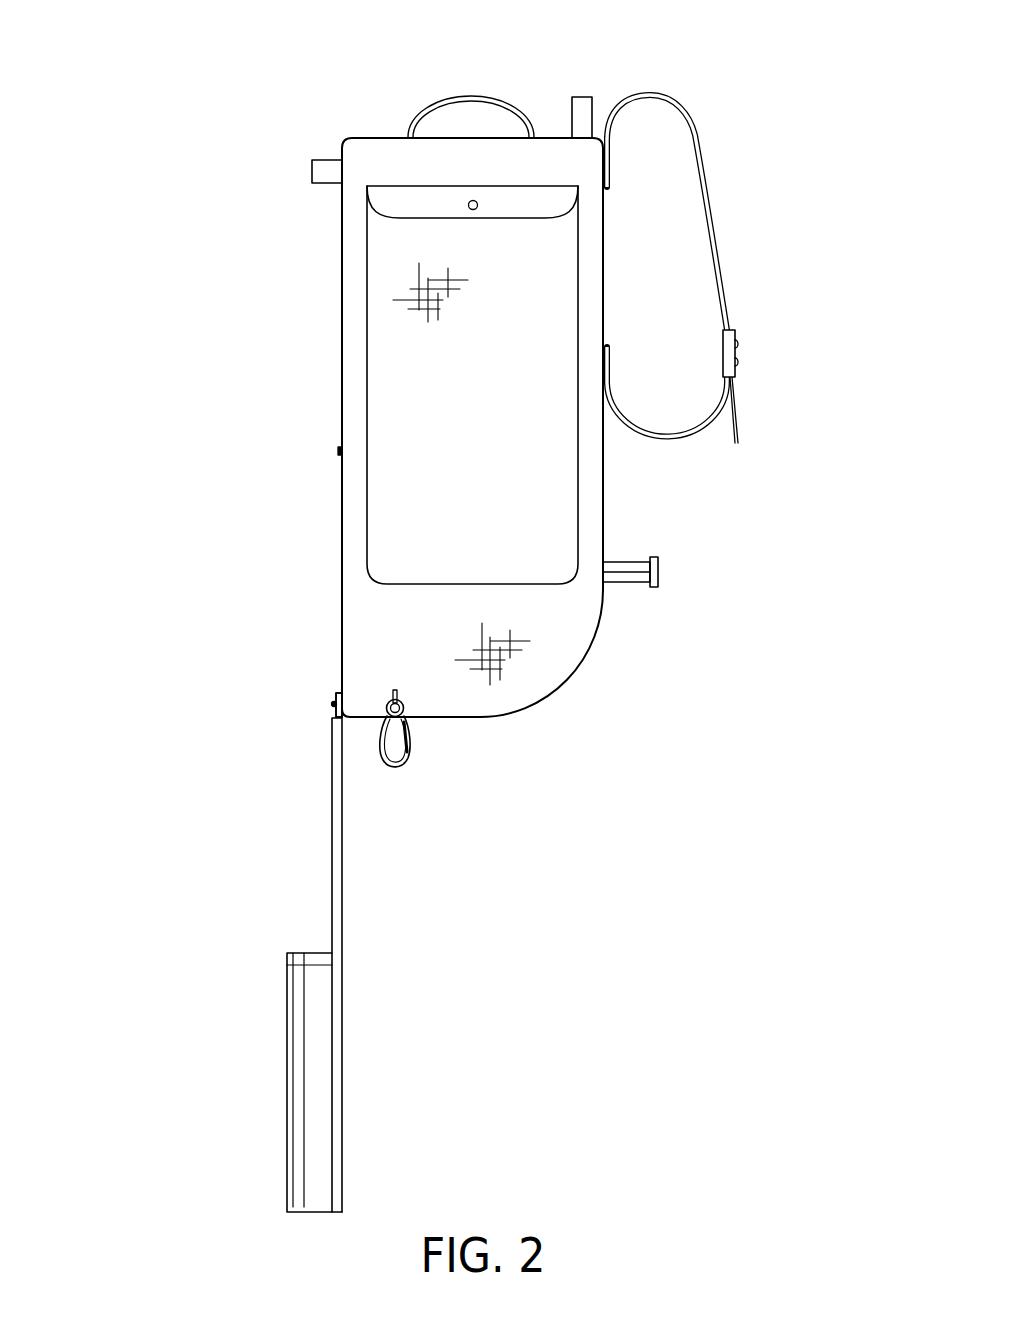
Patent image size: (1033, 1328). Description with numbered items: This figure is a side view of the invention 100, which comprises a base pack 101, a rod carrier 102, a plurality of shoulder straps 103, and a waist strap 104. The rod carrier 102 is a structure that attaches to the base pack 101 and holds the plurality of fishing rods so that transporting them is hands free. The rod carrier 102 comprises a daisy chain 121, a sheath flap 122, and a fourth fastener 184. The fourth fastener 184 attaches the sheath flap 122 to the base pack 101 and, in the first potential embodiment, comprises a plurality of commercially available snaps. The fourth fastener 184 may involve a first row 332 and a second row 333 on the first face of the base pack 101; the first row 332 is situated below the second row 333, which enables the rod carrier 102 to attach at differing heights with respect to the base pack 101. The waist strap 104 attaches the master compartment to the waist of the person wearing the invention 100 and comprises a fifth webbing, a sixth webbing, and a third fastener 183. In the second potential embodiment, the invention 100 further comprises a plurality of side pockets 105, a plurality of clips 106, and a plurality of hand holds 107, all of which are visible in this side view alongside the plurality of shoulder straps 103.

The invention 100 is at (140, 192).
The base pack 101 is at (345, 138).
The rod carrier 102 is at (332, 843).
The plurality of shoulder straps 103 is at (694, 130).
The waist strap 104 is at (658, 570).
The plurality of side pockets 105 is at (413, 378).
The plurality of clips 106 is at (410, 765).
The plurality of hand holds 107 is at (580, 97).
The daisy chain 121 is at (312, 172).
The sheath flap 122 is at (289, 1030).
The third fastener 183 is at (622, 573).
The fourth fastener 184 is at (333, 702).
The first row 332 is at (262, 710).
The second row 333 is at (272, 453).